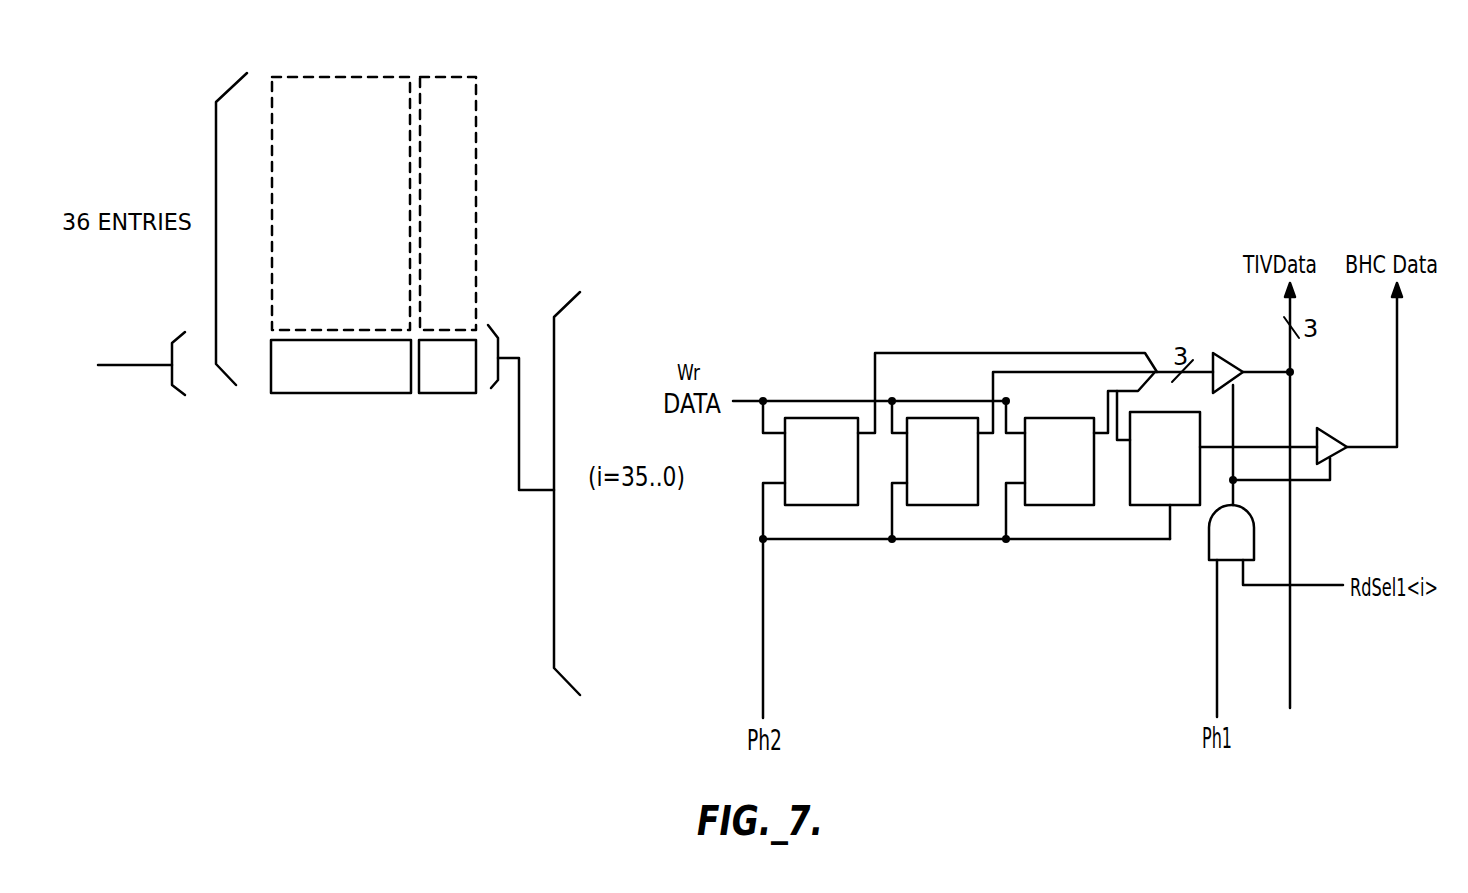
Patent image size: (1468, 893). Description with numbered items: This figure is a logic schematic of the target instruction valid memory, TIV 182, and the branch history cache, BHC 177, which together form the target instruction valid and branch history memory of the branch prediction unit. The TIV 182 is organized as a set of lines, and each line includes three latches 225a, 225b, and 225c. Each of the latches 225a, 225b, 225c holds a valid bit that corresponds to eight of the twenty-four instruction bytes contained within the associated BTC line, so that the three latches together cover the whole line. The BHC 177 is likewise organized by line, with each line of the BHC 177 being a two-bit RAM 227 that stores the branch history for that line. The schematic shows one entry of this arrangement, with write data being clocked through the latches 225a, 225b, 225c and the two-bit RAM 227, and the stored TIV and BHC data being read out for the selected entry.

The TIV 182 is at (350, 74).
The BHC 177 is at (442, 74).
The latch 225a is at (800, 508).
The latch 225b is at (922, 508).
The latch 225c is at (1040, 508).
The 2 bit RAM 227 is at (1152, 505).